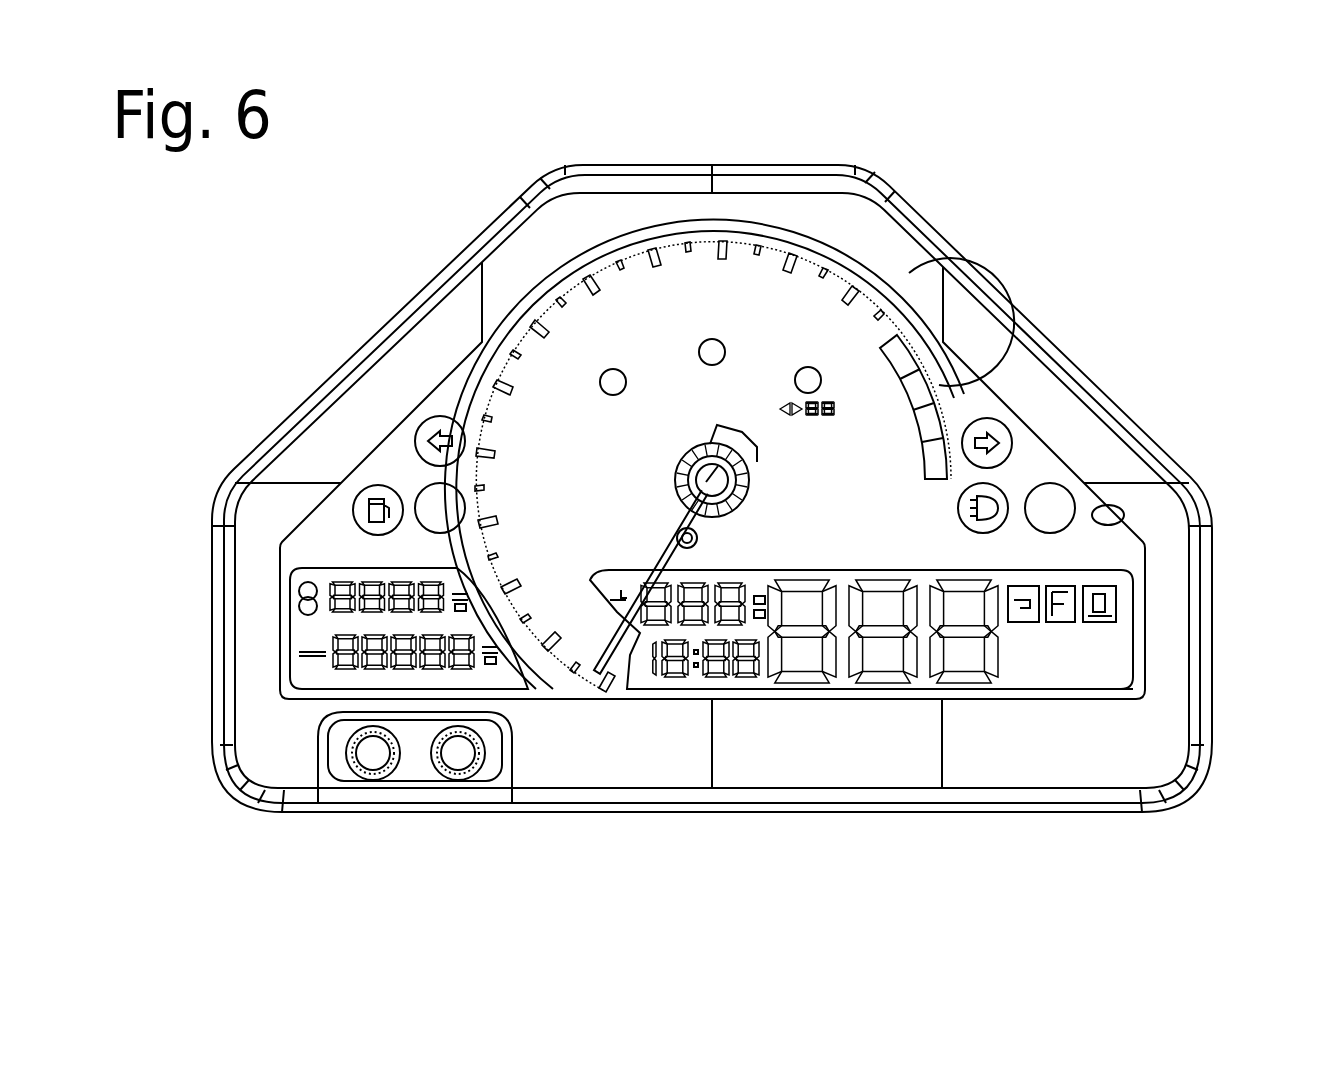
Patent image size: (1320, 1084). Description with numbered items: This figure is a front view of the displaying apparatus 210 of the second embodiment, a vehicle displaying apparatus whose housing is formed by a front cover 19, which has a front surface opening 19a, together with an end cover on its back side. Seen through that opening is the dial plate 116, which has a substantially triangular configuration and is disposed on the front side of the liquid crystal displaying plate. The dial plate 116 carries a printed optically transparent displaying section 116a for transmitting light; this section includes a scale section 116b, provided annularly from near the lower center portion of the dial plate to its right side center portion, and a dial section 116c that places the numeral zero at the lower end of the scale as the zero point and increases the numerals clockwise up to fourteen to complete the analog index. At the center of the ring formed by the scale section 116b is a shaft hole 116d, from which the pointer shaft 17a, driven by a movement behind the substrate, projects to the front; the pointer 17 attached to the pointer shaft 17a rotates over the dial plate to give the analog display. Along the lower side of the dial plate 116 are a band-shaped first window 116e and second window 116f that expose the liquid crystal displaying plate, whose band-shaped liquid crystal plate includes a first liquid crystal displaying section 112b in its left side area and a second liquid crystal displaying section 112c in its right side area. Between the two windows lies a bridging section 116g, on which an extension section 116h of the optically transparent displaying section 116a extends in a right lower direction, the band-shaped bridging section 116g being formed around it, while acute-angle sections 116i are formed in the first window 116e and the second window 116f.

The displaying apparatus 210 is at (1137, 338).
The front cover 19 is at (1037, 812).
The front surface opening 19a is at (1127, 530).
The dial plate 116 is at (957, 393).
The optically transparent displaying section 116a is at (1048, 153).
The scale section 116b is at (868, 358).
The dial section 116c is at (887, 308).
The shaft hole 116d is at (752, 483).
The first window 116e is at (357, 568).
The second window 116f is at (1080, 552).
The bridging section 116g is at (633, 700).
The extension section 116h is at (584, 697).
The acute-angle sections 116i is at (609, 622).
The pointer 17 is at (677, 548).
The pointer shaft 17a is at (762, 453).
The first liquid crystal displaying section 112b is at (300, 705).
The second liquid crystal displaying section 112c is at (1000, 690).